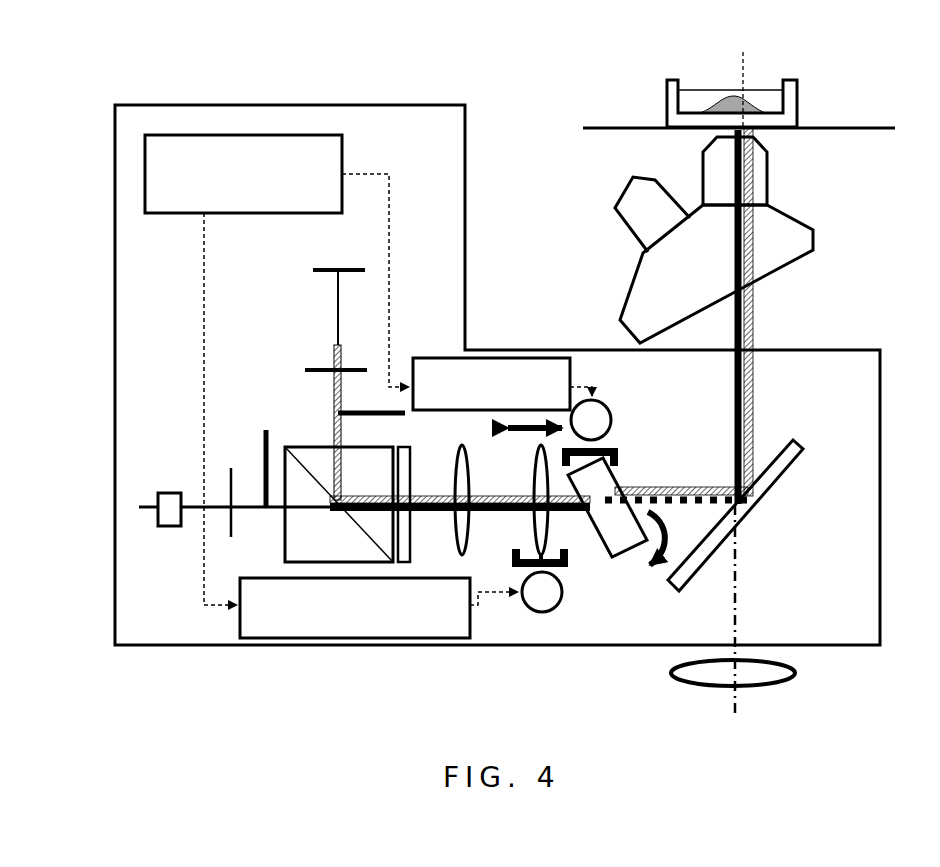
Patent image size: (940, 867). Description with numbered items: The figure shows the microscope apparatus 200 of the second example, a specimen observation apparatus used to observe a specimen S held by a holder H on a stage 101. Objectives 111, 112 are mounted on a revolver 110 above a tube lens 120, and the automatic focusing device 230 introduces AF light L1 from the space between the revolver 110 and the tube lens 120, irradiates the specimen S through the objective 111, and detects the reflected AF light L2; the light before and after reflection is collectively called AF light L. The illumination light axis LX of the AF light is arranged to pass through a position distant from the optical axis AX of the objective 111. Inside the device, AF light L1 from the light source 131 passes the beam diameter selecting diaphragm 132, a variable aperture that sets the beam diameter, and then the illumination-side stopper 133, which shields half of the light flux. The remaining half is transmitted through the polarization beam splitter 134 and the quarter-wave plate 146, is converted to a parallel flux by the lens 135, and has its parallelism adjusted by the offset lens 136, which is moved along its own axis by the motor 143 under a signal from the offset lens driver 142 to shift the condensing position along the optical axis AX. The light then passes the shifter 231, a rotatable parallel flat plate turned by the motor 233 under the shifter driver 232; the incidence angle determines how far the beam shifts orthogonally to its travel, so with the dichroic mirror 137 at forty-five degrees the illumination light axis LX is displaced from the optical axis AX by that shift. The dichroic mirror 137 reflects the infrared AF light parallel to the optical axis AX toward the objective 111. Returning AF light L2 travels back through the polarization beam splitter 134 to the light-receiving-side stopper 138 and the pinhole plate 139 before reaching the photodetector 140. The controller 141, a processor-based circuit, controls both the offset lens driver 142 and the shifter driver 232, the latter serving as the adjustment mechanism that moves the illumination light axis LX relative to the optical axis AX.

The microscope apparatus 200 is at (256, 80).
The automatic focusing device 230 is at (355, 105).
The controller 141 is at (172, 215).
The shifter driver 232 is at (440, 358).
The offset lens driver 142 is at (415, 578).
The light source 131 is at (169, 493).
The beam diameter selecting diaphragm 132 is at (231, 468).
The illumination-side stopper 133 is at (266, 430).
The polarization beam splitter 134 is at (285, 527).
The lens 135 is at (459, 447).
The offset lens 136 is at (535, 489).
The dichroic mirror 137 is at (770, 493).
The light-receiving-side stopper 138 is at (345, 411).
The pinhole plate 139 is at (341, 370).
The photodetector 140 is at (340, 268).
The motor 143 is at (561, 604).
The λ/4 plate 146 is at (401, 447).
The shifter 231 is at (618, 471).
The motor 233 is at (610, 400).
The tube lens 120 is at (790, 668).
The stage 101 is at (832, 127).
The revolver 110 is at (814, 232).
The objective 111 is at (769, 176).
The objective 112 is at (625, 228).
The optical axis AX is at (740, 601).
The AF light L is at (853, 273).
The AF light L1 is at (750, 303).
The AF light L2 is at (753, 330).
The illumination light axis LX is at (742, 52).
The specimen S is at (752, 94).
The holder H is at (792, 80).